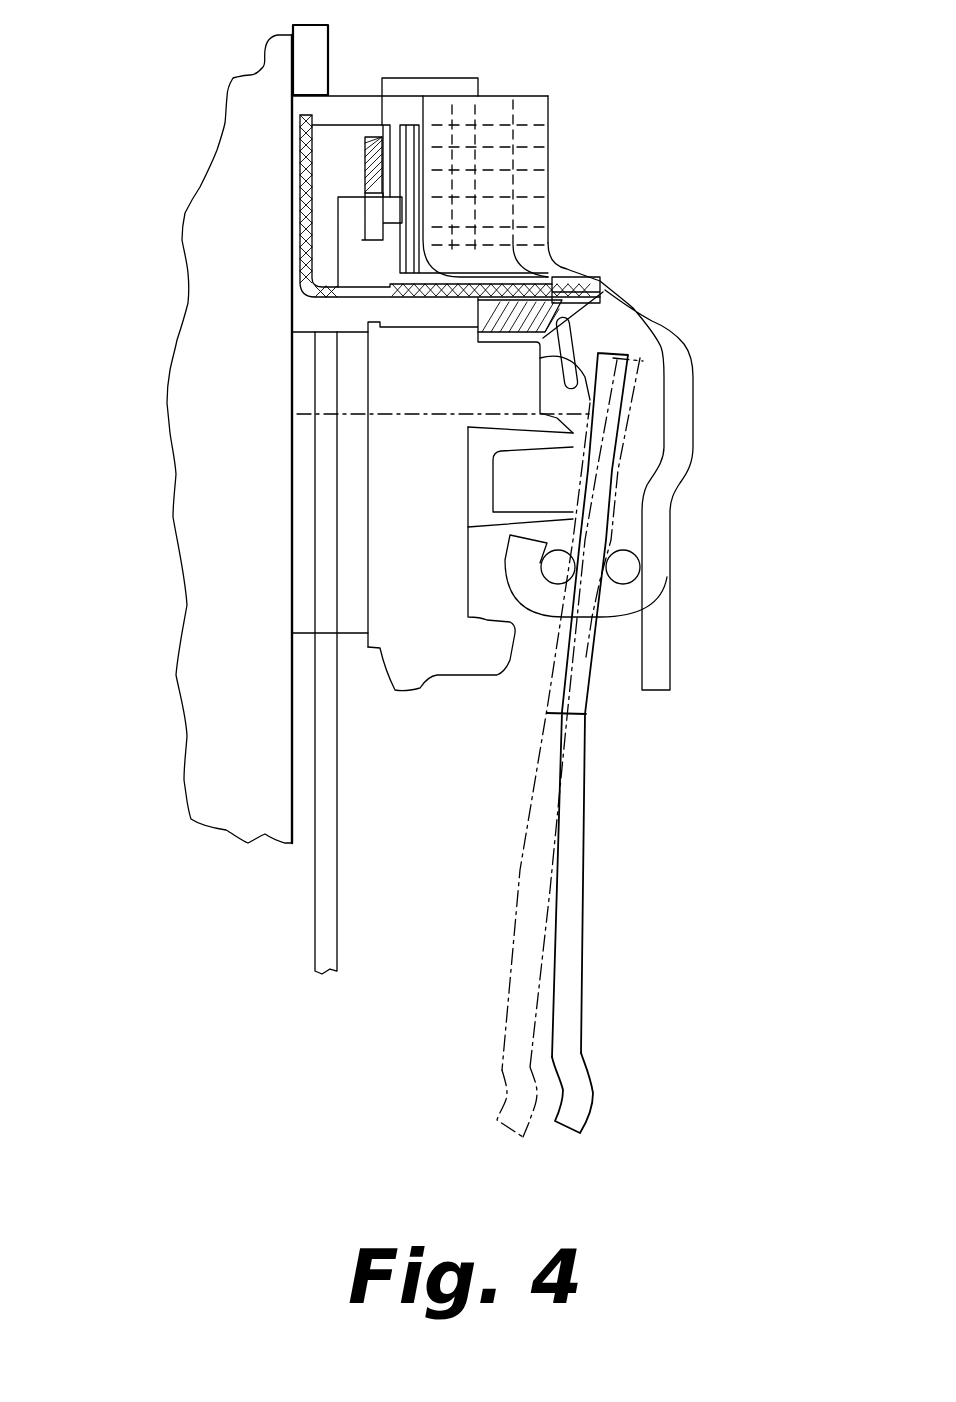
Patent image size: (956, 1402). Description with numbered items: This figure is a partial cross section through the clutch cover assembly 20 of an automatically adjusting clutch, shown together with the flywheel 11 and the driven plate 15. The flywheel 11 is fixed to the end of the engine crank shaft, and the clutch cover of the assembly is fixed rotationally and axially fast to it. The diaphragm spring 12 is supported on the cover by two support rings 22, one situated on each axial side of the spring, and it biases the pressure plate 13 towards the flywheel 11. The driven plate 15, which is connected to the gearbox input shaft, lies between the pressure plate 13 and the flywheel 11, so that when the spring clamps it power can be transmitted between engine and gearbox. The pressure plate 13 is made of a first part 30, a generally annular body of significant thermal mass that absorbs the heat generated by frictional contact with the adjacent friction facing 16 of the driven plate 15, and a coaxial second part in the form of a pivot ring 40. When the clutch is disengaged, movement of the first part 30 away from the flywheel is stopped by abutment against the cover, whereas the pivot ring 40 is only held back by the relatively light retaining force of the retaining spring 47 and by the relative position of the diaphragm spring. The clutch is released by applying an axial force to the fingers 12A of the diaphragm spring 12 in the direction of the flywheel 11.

The flywheel 11 is at (195, 464).
The diaphragm spring 12 is at (564, 990).
The fingers 12A is at (582, 1098).
The pressure plate 13 is at (347, 378).
The driven plate 15 is at (315, 928).
The friction facing 16 is at (300, 597).
The clutch cover assembly 20 is at (683, 323).
The support rings 22 is at (538, 567).
The first part 30 is at (393, 487).
The pivot ring 40 is at (577, 430).
The retaining spring 47 is at (565, 345).